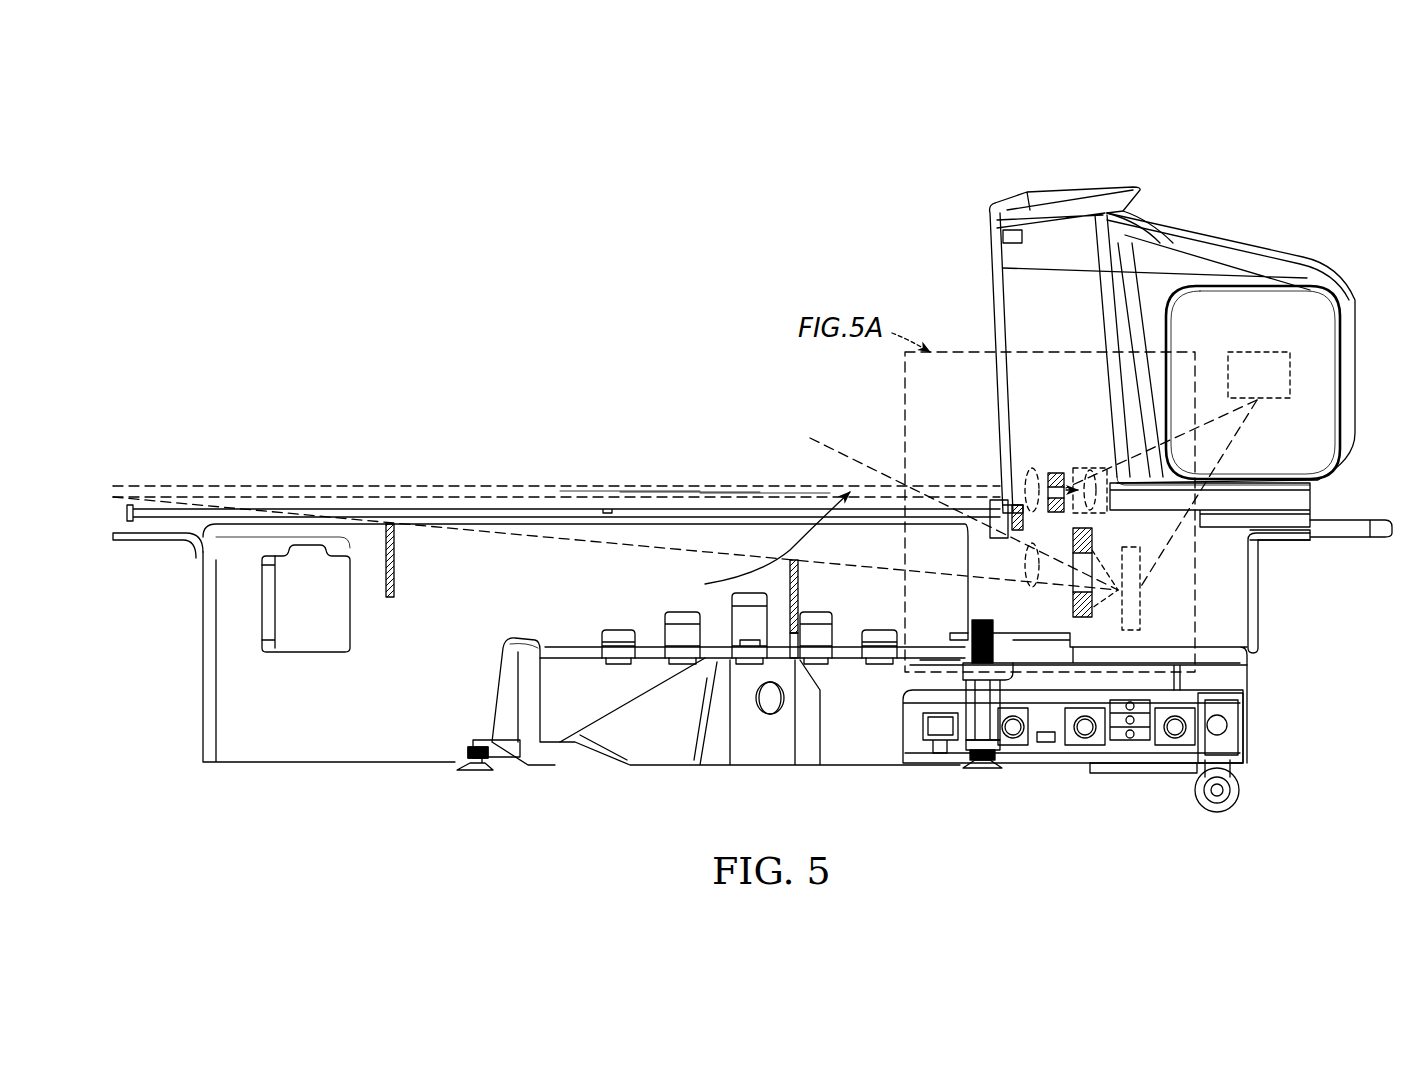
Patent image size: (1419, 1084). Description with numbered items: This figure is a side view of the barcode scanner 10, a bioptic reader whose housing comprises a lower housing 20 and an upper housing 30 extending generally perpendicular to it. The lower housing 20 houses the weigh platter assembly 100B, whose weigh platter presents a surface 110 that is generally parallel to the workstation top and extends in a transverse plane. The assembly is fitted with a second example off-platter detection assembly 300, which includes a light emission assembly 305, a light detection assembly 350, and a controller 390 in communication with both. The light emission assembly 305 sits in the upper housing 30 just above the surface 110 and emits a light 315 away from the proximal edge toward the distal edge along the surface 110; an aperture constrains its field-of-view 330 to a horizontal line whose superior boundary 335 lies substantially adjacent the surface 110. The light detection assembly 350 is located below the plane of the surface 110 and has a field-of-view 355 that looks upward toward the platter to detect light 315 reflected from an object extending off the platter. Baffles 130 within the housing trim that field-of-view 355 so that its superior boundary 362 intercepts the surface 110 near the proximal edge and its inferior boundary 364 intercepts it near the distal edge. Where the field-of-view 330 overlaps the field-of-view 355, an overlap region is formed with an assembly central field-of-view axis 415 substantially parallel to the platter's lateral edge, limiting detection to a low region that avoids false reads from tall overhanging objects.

The barcode scanner 10 is at (852, 250).
The lower housing 20 is at (198, 657).
The upper housing 30 is at (1078, 178).
The weigh platter assembly 100B is at (404, 505).
The surface 110 is at (308, 506).
The baffles 130 is at (396, 562).
The off-platter detection assembly 300 is at (1162, 578).
The light emission assembly 305 is at (1058, 465).
The light 315 is at (596, 490).
The field-of-view 330 is at (683, 496).
The superior boundary 335 is at (753, 547).
The light detection assembly 350 is at (1065, 580).
The field-of-view 355 is at (882, 574).
The superior boundary 362 is at (832, 442).
The inferior boundary 364 is at (610, 548).
The controller 390 is at (1260, 352).
The assembly central field-of-view axis 415 is at (752, 496).